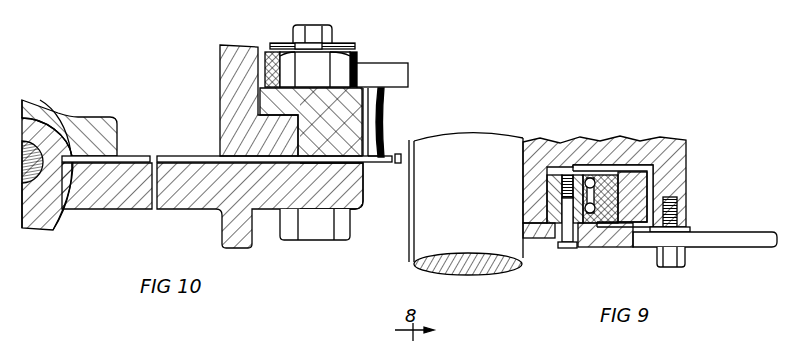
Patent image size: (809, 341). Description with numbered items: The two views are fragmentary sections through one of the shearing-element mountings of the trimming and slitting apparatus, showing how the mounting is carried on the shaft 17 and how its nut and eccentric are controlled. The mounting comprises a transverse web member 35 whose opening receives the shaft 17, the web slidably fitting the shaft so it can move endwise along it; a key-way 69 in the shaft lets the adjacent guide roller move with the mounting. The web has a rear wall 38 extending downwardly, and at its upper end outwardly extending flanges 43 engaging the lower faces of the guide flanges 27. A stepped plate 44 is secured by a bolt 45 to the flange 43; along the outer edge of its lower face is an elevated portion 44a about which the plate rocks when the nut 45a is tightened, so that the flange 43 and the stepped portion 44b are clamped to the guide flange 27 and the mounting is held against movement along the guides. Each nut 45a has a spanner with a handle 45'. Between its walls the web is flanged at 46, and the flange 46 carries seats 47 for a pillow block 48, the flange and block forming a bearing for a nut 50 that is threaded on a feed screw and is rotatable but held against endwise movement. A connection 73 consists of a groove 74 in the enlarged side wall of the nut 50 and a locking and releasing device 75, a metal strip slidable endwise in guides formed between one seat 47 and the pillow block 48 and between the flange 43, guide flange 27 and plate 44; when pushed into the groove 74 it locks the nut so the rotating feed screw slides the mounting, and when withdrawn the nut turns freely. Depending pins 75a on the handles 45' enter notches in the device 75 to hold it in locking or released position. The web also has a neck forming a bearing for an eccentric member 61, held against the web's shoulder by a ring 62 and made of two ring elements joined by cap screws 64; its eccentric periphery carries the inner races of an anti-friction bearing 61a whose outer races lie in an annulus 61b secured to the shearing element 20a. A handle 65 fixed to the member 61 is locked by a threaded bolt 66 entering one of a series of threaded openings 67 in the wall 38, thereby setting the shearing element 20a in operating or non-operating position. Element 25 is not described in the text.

In FIG. 9, the shaft 17 is at (455, 155).
In FIG. 9, the shearing element 20a is at (676, 162).
In FIG. 10, the mounting plate 25 is at (242, 78).
In FIG. 10, the guide flange 27 is at (300, 113).
In FIG. 9, the transverse web member 35 is at (545, 158).
In FIG. 9, the rear wall 38 is at (672, 195).
In FIG. 10, the outwardly extending flange 43 is at (362, 200).
In FIG. 10, the stepped plate 44 is at (355, 130).
In FIG. 10, the off-set or elevated portion 44a is at (362, 142).
In FIG. 10, the stepped portion 44b is at (262, 97).
In FIG. 10, the bolt 45 is at (311, 242).
In FIG. 10, the handle 45' is at (402, 72).
In FIG. 10, the nut 45a is at (272, 65).
In FIG. 10, the flange 46 is at (103, 207).
In FIG. 10, the seat 47 is at (60, 195).
In FIG. 10, the pillow block 48 is at (62, 125).
In FIG. 10, the nut 50 is at (35, 195).
In FIG. 9, the eccentric member 61 is at (555, 240).
In FIG. 9, the anti-friction bearing 61a is at (590, 175).
In FIG. 9, the annulus 61b is at (600, 212).
In FIG. 9, the ring 62 is at (530, 229).
In FIG. 9, the cap screw 64 is at (568, 250).
In FIG. 9, the handle 65 is at (712, 240).
In FIG. 9, the threaded bolt 66 is at (673, 262).
In FIG. 9, the threaded opening 67 is at (678, 214).
In FIG. 9, the key-way 69 is at (409, 258).
In FIG. 10, the connection 73 is at (279, 148).
In FIG. 10, the groove 74 is at (55, 195).
In FIG. 10, the locking and releasing device 75 is at (125, 156).
In FIG. 10, the depending pin 75a is at (375, 138).